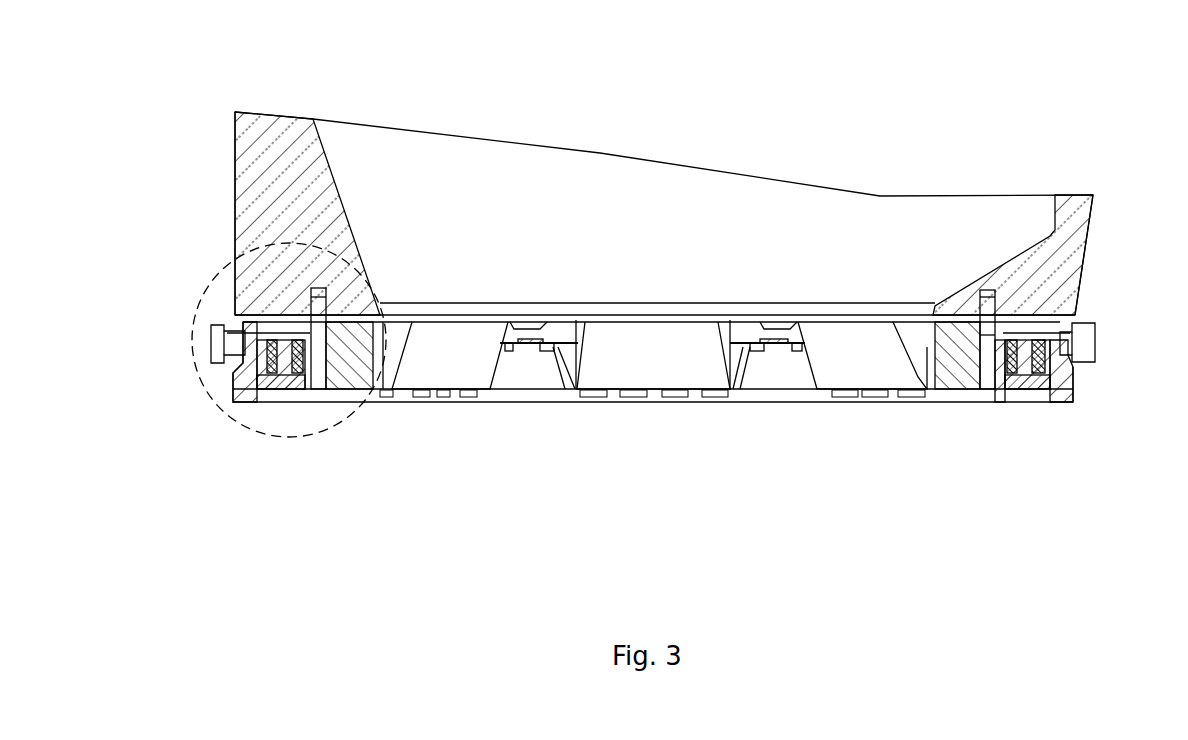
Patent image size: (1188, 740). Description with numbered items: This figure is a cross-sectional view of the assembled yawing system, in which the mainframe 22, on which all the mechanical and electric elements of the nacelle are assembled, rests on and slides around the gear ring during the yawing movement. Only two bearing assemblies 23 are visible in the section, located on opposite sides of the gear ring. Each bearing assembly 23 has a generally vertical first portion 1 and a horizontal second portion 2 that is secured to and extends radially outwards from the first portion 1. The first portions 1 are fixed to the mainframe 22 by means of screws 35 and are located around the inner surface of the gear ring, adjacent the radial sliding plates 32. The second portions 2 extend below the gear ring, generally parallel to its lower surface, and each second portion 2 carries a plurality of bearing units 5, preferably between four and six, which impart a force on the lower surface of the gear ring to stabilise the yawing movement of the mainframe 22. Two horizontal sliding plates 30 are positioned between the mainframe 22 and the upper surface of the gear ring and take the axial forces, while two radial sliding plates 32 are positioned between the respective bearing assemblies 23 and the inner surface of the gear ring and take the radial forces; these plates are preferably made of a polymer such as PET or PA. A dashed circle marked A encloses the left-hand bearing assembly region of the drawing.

The first portion 1 is at (334, 318).
The second portion 2 is at (262, 355).
The bearing units 5 is at (293, 385).
The mainframe 22 is at (283, 152).
The bearing assemblies 23 is at (395, 385).
The horizontal sliding plate 30 is at (290, 322).
The radial sliding plate 32 is at (318, 340).
The screws 35 is at (1013, 300).
The detail region A is at (190, 374).